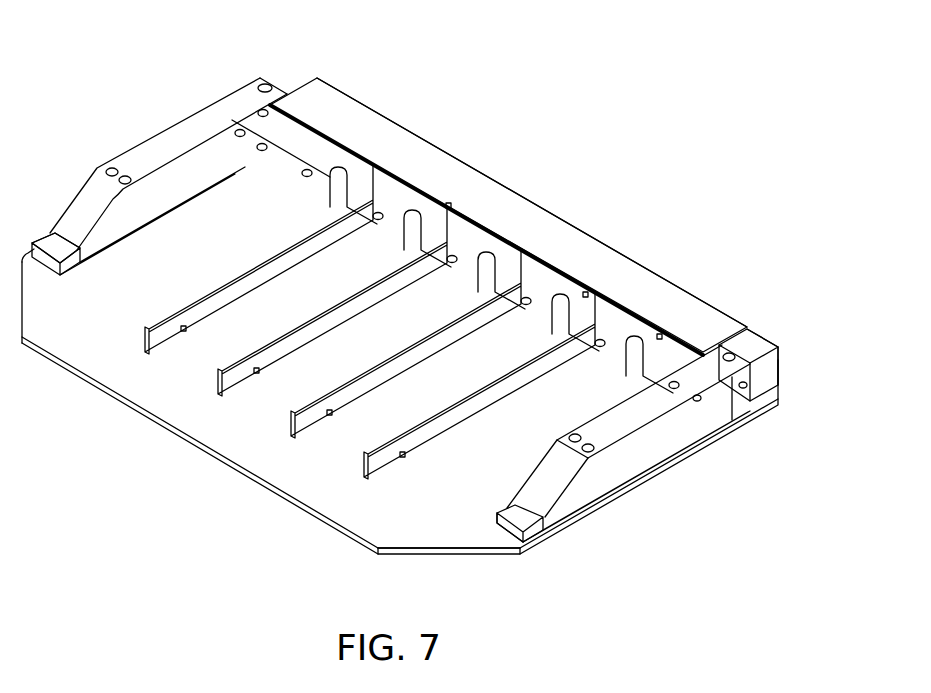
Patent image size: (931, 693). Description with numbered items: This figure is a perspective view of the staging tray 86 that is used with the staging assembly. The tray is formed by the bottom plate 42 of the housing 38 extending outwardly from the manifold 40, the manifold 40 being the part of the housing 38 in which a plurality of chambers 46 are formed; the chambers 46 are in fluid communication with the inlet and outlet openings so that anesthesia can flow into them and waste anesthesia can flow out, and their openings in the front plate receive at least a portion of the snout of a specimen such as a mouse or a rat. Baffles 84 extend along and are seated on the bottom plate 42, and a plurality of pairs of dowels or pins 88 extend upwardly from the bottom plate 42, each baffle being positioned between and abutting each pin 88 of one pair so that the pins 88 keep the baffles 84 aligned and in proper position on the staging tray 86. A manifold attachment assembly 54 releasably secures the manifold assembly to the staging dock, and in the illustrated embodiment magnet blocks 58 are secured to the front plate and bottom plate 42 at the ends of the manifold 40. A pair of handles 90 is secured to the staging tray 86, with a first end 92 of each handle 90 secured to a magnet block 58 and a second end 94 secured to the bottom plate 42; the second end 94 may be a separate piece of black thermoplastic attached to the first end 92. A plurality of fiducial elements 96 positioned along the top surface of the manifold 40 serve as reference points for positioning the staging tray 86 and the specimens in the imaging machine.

The housing 38 is at (630, 259).
The manifold 40 is at (486, 180).
The bottom plate 42 is at (506, 460).
The chambers 46 is at (405, 236).
The manifold attachment assembly 54 is at (262, 58).
The magnet blocks 58 is at (770, 379).
The baffles 84 is at (447, 338).
The staging tray 86 is at (210, 492).
The pins 88 is at (332, 413).
The handles 90 is at (152, 152).
The first end 92 is at (744, 359).
The second end 94 is at (532, 542).
The fiducial elements 96 is at (311, 126).